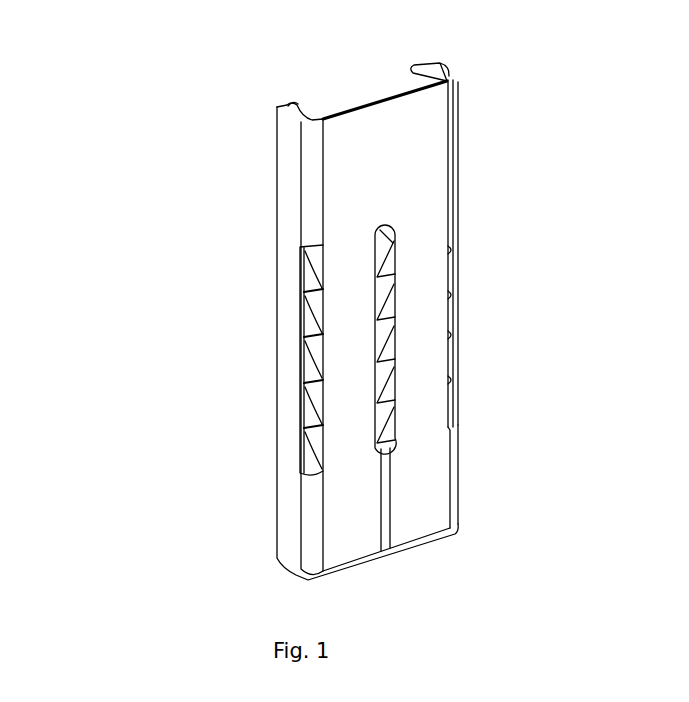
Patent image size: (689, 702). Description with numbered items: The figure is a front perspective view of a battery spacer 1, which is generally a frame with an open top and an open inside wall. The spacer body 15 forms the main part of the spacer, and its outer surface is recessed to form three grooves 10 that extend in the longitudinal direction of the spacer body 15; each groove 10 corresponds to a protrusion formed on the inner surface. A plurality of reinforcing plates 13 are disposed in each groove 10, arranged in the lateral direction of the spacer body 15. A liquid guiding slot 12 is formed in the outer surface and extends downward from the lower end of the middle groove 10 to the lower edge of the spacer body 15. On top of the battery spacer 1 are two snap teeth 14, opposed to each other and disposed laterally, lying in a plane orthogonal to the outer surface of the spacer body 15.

The battery spacer 1 is at (82, 25).
The groove 10 is at (305, 313).
The liquid guiding slot 12 is at (388, 480).
The reinforcing plate 13 is at (306, 439).
The snap tooth 14 is at (290, 108).
The spacer body 15 is at (405, 162).